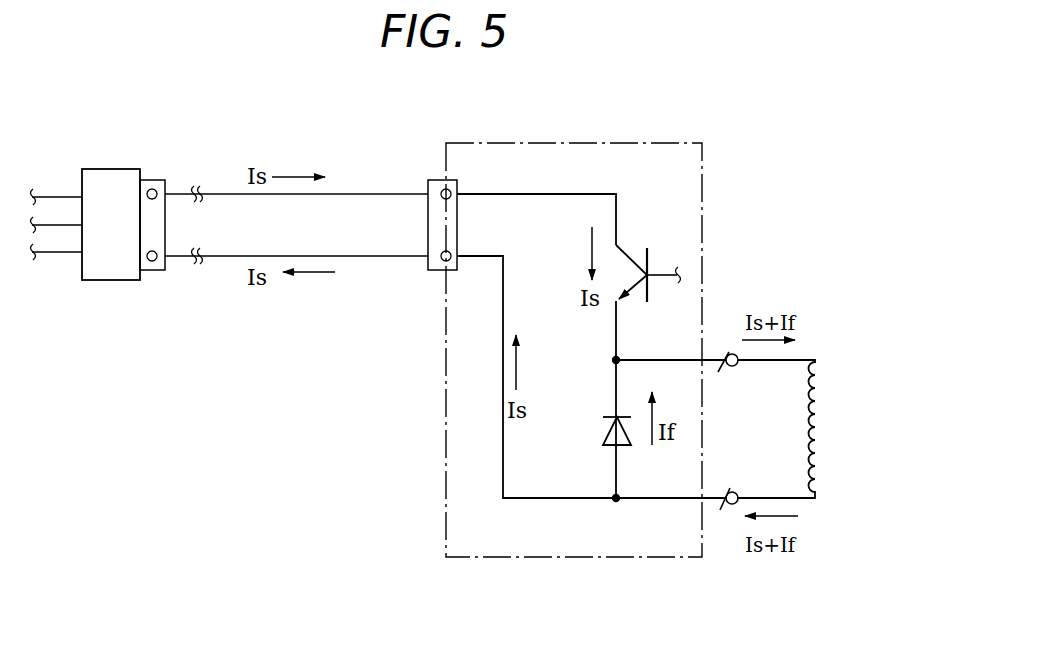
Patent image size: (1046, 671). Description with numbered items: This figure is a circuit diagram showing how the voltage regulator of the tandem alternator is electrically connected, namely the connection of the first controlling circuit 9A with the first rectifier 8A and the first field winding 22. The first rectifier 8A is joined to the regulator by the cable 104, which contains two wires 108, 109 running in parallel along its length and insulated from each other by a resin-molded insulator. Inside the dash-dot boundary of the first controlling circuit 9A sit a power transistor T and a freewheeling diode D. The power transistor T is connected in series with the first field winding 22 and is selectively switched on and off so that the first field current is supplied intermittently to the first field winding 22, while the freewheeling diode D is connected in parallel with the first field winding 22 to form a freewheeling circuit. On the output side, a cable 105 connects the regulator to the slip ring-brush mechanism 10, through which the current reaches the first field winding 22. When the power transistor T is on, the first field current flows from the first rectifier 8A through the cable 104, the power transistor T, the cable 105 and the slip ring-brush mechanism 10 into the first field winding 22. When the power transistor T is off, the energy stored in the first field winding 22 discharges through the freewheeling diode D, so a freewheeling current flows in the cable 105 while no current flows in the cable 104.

The first rectifier 8A is at (118, 178).
The cable 104 is at (372, 172).
The cable 105 is at (708, 357).
The slip ring-brush mechanism 10 is at (725, 518).
The wire 108 is at (340, 259).
The wire 109 is at (392, 196).
The first controlling circuit 9A is at (557, 160).
The first field winding 22 is at (818, 410).
The power transistor T is at (630, 246).
The freewheeling diode D is at (598, 432).